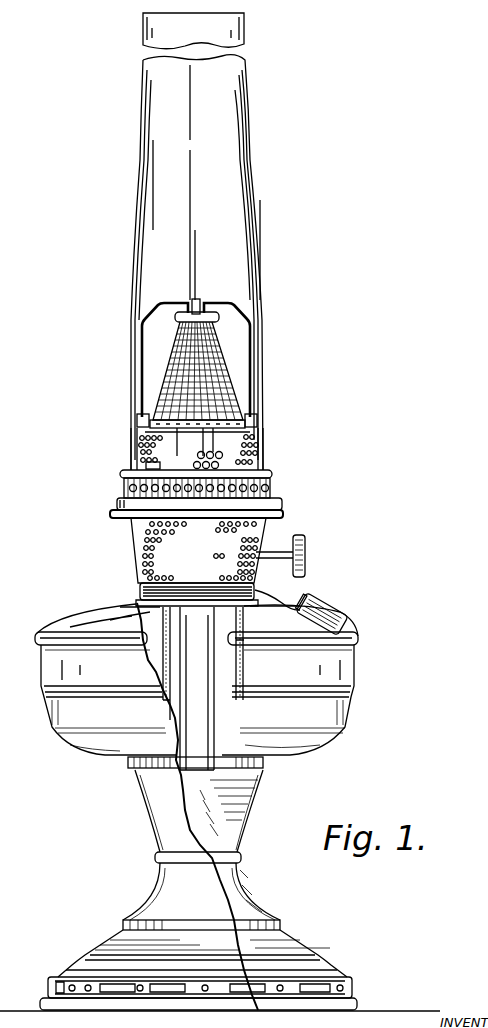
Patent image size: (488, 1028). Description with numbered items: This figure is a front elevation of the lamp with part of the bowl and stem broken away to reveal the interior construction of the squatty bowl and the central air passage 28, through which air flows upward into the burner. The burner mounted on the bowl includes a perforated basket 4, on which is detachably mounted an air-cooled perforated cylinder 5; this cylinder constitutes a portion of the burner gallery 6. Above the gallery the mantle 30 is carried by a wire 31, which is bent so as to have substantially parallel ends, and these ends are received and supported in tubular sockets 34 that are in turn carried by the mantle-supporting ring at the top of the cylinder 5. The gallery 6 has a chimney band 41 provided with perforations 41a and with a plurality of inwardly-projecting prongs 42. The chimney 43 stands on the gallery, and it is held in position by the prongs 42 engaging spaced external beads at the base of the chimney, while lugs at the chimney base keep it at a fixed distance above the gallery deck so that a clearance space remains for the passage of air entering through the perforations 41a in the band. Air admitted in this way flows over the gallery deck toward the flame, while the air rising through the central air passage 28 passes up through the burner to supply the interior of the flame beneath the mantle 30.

The perforated basket 4 is at (140, 549).
The air-cooled perforated cylinder 5 is at (251, 439).
The burner gallery 6 is at (118, 503).
The central air passage 28 is at (193, 718).
The mantle 30 is at (160, 370).
The wire 31 is at (131, 335).
The tubular sockets 34 is at (252, 414).
The chimney band 41 is at (273, 496).
The perforations 41a is at (266, 488).
The inwardly-projecting prongs 42 is at (143, 460).
The chimney 43 is at (243, 297).